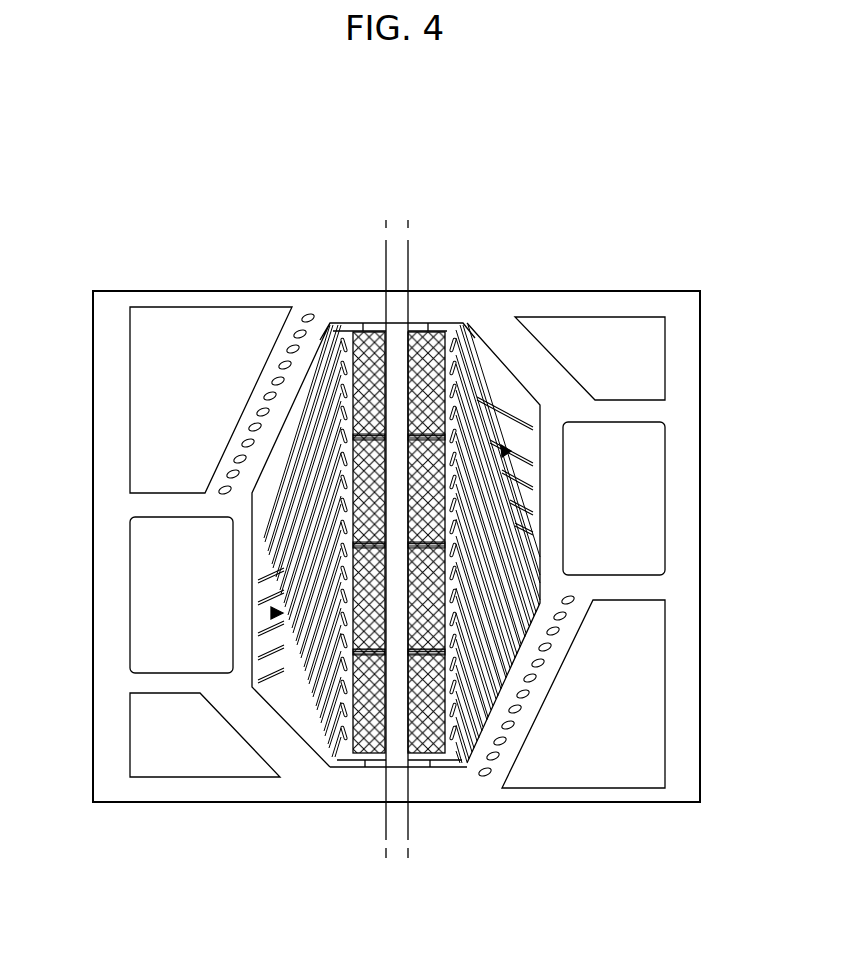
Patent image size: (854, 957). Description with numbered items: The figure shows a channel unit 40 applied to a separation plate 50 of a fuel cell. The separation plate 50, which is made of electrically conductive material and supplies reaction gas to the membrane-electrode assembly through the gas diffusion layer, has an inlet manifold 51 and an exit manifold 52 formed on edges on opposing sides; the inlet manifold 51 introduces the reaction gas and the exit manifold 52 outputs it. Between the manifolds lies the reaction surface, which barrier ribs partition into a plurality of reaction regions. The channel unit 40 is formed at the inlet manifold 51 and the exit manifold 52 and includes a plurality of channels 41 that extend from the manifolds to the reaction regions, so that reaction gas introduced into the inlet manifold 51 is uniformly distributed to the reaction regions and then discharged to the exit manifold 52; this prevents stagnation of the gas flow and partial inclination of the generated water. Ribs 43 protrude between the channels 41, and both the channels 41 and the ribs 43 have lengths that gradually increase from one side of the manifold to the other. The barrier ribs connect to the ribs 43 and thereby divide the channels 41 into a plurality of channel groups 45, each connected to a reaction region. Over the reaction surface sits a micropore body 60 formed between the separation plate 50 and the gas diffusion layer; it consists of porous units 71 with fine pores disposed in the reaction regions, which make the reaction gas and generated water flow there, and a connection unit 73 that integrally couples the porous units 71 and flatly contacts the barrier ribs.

The separation plate 50 is at (406, 150).
The inlet manifold 51 is at (220, 307).
The exit manifold 52 is at (573, 788).
The channel groups 45 is at (290, 387).
The channels 41 is at (307, 465).
The ribs 43 is at (307, 505).
The channel unit 40 is at (272, 613).
The micropore body 60 is at (305, 876).
The porous units 71 is at (353, 702).
The connection unit 73 is at (353, 652).